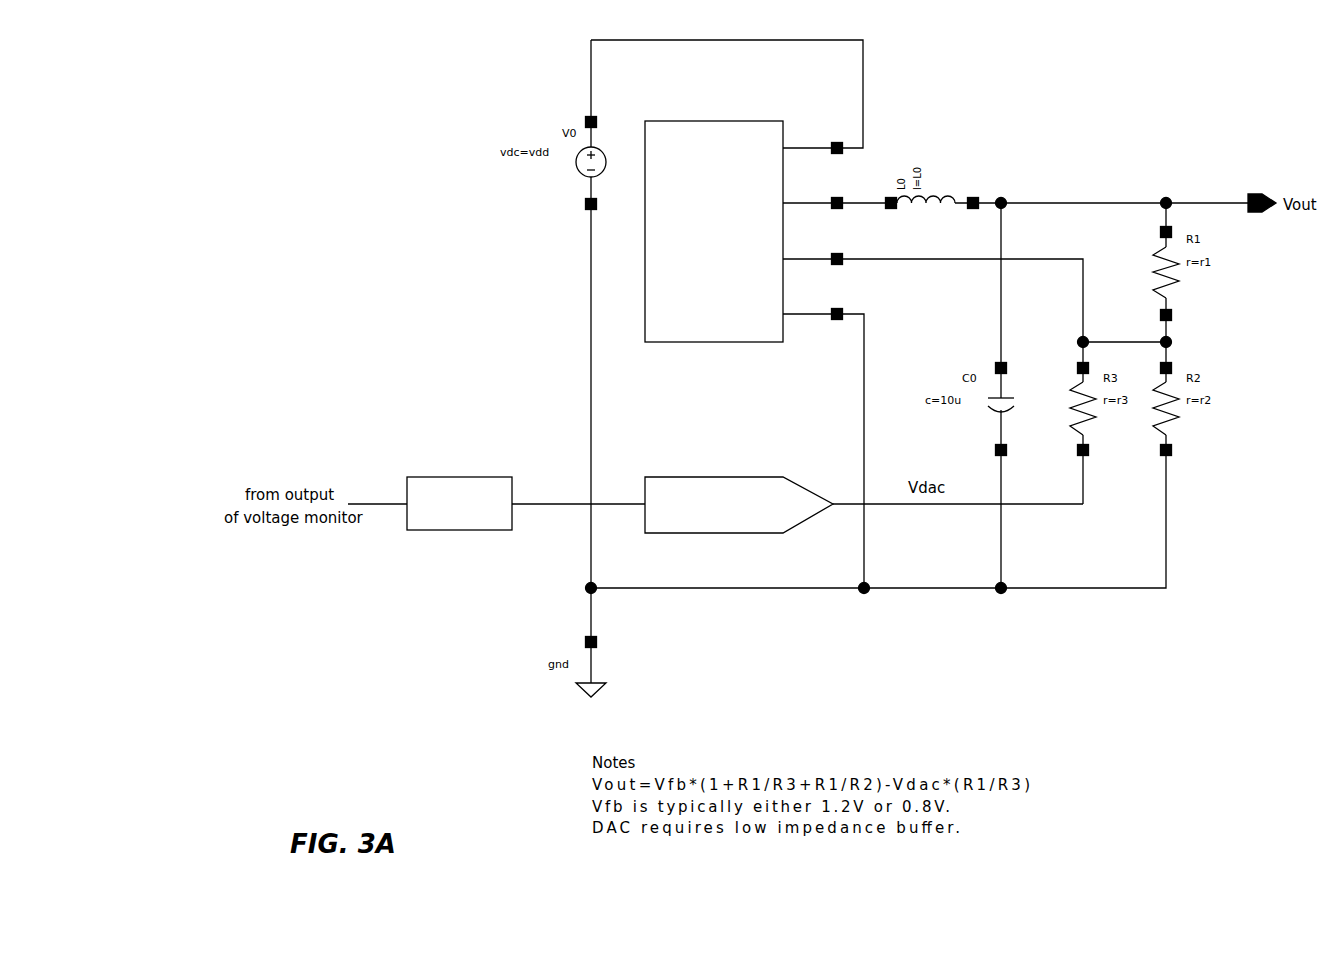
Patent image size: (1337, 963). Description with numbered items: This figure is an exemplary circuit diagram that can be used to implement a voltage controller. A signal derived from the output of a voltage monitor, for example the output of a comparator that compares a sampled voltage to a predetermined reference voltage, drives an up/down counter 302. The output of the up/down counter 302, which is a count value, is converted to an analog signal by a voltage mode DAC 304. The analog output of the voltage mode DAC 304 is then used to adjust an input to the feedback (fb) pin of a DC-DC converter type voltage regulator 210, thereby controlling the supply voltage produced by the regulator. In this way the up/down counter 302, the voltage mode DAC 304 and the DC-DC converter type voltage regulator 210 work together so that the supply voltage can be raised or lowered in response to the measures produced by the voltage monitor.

The DC-DC converter type voltage regulator 210 is at (725, 217).
The up/down counter 302 is at (464, 482).
The voltage mode DAC 304 is at (743, 484).